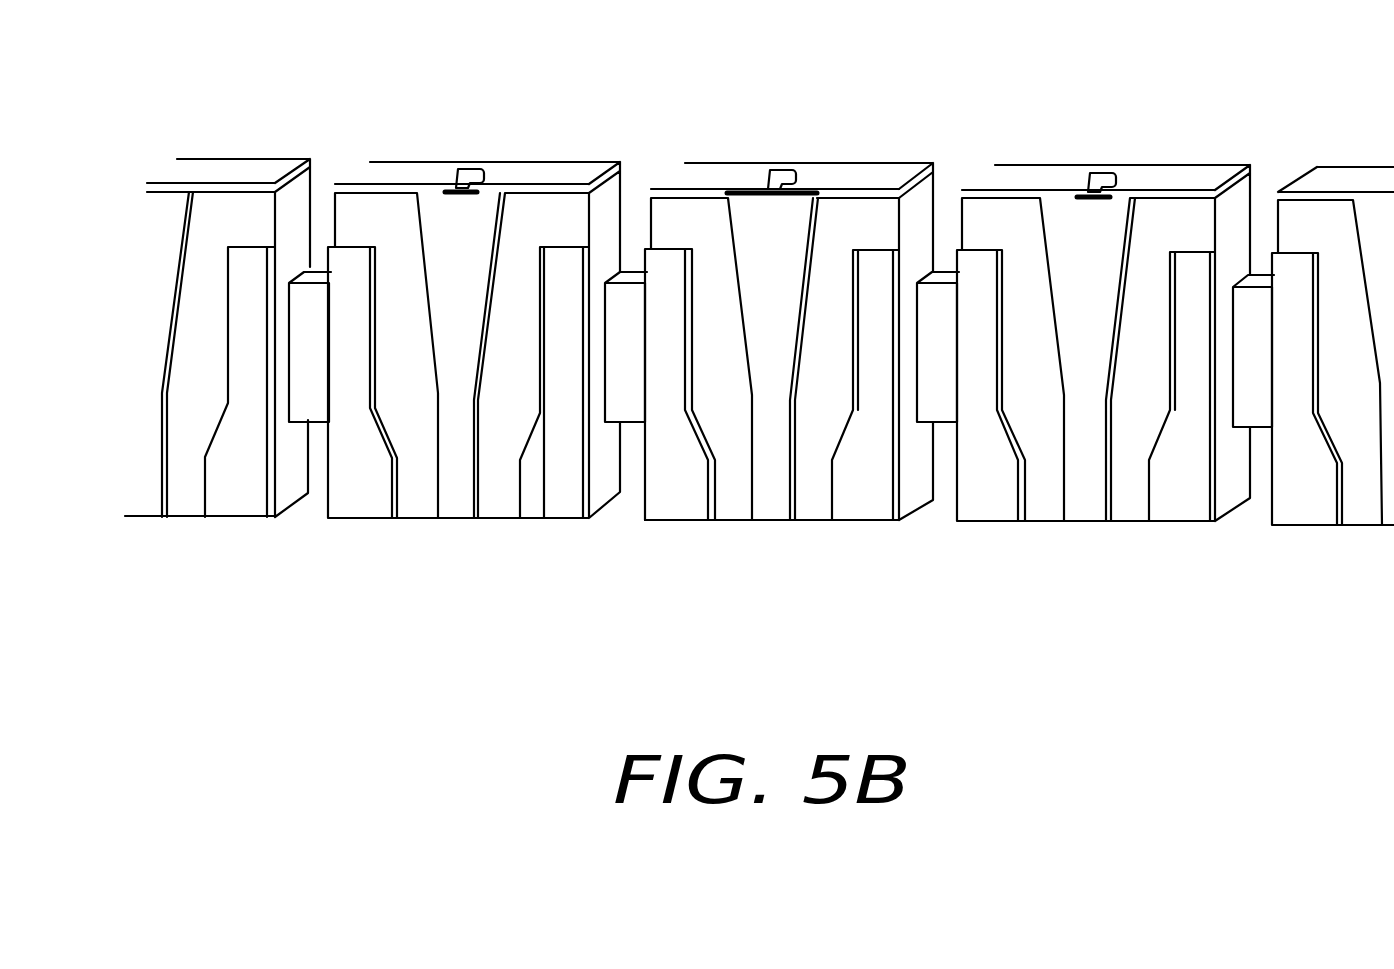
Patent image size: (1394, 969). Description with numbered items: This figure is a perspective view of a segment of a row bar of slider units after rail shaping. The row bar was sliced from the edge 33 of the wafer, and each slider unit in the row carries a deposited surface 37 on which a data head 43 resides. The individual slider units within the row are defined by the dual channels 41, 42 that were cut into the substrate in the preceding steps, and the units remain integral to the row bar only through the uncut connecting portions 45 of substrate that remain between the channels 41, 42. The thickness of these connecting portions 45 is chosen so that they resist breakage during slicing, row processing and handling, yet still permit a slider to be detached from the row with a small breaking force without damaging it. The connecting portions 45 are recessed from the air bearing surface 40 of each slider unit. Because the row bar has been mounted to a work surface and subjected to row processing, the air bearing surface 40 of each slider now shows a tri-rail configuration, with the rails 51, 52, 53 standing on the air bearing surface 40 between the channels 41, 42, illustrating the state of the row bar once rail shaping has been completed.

The edge of the wafer 33 is at (675, 214).
The deposited surface 37 is at (875, 180).
The data head 43 is at (778, 170).
The dual channel 41 is at (638, 166).
The dual channel 42 is at (637, 522).
The connecting portion 45 is at (782, 347).
The air bearing surface 40 is at (733, 468).
The rail 51 is at (698, 525).
The rail 52 is at (775, 527).
The rail 53 is at (856, 528).